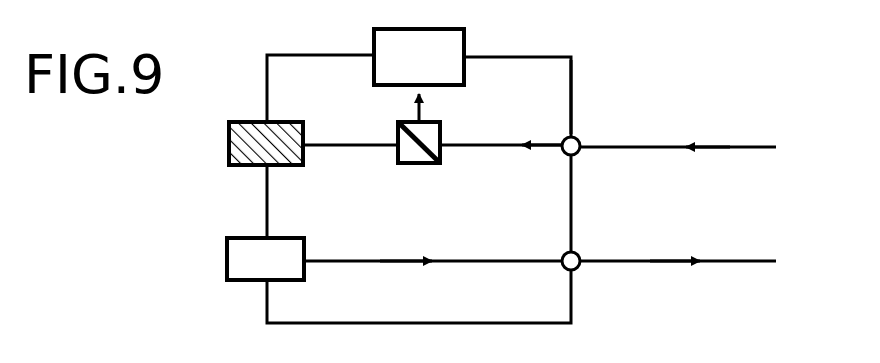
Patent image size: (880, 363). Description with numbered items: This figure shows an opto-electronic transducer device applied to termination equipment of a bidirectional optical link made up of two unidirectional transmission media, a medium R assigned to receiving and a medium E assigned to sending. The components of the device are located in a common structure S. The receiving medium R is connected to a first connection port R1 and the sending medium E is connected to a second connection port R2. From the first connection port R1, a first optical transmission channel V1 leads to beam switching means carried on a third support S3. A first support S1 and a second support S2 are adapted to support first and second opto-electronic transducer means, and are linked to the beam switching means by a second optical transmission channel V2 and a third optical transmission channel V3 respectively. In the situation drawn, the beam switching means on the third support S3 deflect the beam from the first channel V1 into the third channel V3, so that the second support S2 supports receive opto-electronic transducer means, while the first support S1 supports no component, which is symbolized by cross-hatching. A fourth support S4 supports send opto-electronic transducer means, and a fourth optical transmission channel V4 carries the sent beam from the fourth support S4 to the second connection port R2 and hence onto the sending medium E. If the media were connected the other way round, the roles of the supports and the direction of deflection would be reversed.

The first support S1 is at (229, 143).
The second support S2 is at (464, 41).
The third support S3 is at (398, 163).
The fourth support S4 is at (227, 259).
The first optical transmission channel V1 is at (487, 149).
The second optical transmission channel V2 is at (362, 144).
The third optical transmission channel V3 is at (424, 97).
The fourth optical transmission channel V4 is at (479, 264).
The first connection port R1 is at (577, 154).
The second connection port R2 is at (577, 269).
The transmission medium assigned to receiving R is at (723, 146).
The transmission medium assigned to sending E is at (723, 260).
The common structure S is at (574, 99).